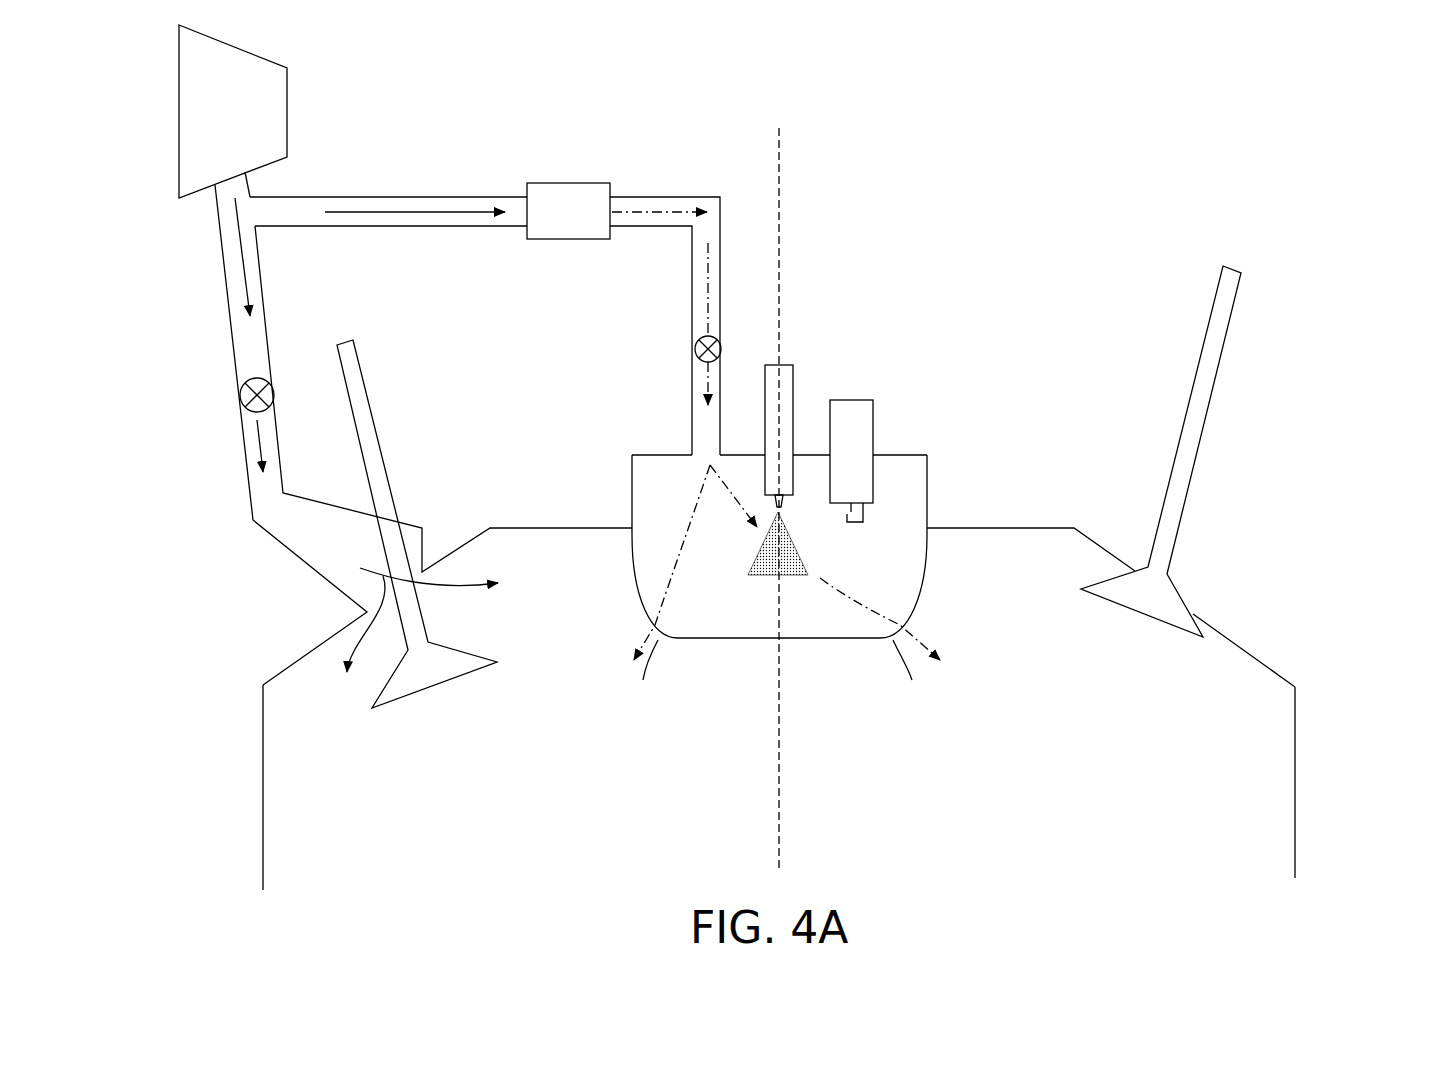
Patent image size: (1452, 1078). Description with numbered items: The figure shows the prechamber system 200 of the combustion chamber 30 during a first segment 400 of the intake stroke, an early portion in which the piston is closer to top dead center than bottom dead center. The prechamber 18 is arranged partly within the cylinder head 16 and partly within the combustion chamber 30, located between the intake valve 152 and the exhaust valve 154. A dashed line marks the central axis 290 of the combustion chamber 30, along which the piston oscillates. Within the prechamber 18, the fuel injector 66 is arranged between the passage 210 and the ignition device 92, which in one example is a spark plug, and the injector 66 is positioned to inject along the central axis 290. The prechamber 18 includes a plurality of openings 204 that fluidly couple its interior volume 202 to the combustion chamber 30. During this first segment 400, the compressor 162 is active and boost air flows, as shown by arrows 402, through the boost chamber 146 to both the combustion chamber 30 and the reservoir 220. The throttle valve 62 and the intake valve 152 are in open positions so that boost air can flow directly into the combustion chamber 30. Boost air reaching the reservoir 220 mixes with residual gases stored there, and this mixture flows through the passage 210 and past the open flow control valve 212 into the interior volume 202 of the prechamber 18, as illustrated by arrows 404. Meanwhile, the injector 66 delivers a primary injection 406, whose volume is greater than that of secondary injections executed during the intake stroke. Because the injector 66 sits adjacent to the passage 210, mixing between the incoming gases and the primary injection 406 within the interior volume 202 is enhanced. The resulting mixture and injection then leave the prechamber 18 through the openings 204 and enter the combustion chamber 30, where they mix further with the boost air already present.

The compressor 162 is at (179, 117).
The boost chamber 146 is at (228, 285).
The arrows 402 is at (246, 272).
The throttle valve 62 is at (242, 400).
The passage 210 is at (676, 197).
The reservoir 220 is at (545, 183).
The arrows 404 is at (708, 272).
The valve 212 is at (695, 349).
The central axis 290 is at (779, 182).
The fuel injector 66 is at (793, 365).
The ignition device 92 is at (873, 400).
The prechamber 18 is at (927, 455).
The cylinder head 16 is at (613, 430).
The interior volume 202 is at (765, 627).
The primary injection 406 is at (788, 575).
The openings 204 is at (780, 672).
The intake valve 152 is at (393, 500).
The exhaust valve 154 is at (1184, 427).
The combustion chamber 30 is at (263, 797).
The prechamber system 200 is at (1207, 160).
The first segment 400 is at (1363, 60).